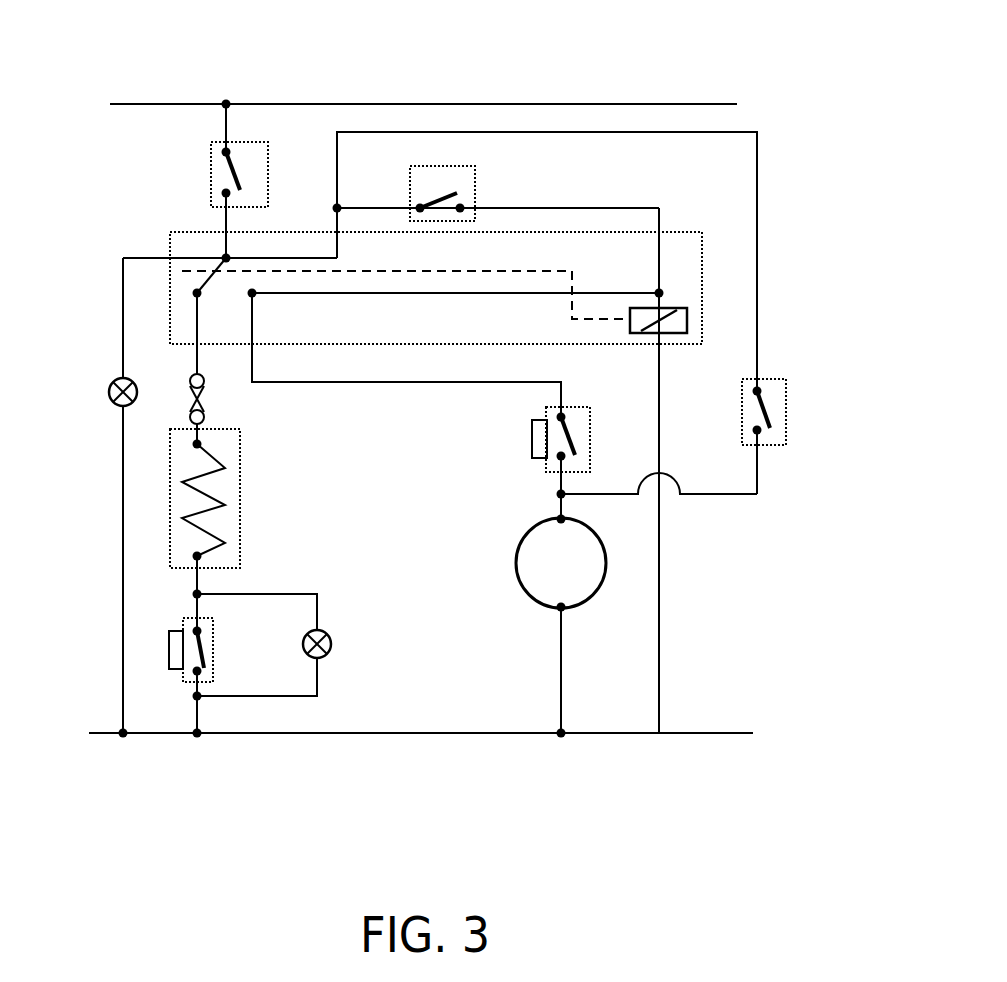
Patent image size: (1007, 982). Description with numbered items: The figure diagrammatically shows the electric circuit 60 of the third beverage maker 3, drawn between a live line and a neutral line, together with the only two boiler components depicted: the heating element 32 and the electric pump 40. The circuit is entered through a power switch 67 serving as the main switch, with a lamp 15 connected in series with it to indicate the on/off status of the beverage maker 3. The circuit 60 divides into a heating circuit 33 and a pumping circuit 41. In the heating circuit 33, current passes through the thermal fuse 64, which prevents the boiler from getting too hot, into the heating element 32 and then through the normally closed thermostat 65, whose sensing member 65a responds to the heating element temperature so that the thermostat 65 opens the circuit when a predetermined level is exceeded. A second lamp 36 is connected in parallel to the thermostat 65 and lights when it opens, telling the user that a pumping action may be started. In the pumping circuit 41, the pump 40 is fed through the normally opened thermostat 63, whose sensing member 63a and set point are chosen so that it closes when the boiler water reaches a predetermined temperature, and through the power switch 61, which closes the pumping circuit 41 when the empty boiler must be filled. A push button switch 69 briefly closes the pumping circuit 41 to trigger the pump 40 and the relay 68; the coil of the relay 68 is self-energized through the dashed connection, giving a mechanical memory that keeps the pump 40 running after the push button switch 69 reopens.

The third beverage maker 3 is at (500, 72).
The lamp 15 is at (108, 392).
The heating element 32 is at (225, 505).
The heating circuit 33 is at (210, 762).
The lamp 36 is at (332, 644).
The electric pump 40 is at (548, 576).
The pumping circuit 41 is at (722, 542).
The electric circuit 60 is at (133, 770).
The power switch 61 is at (742, 410).
The normally opened thermostat 63 is at (592, 439).
The sensing member 63a is at (532, 438).
The thermal fuse 64 is at (205, 404).
The normally closed thermostat 65 is at (215, 650).
The sensing member 65a is at (169, 649).
The power switch 67 is at (211, 174).
The relay 68 is at (689, 320).
The push button switch 69 is at (476, 178).